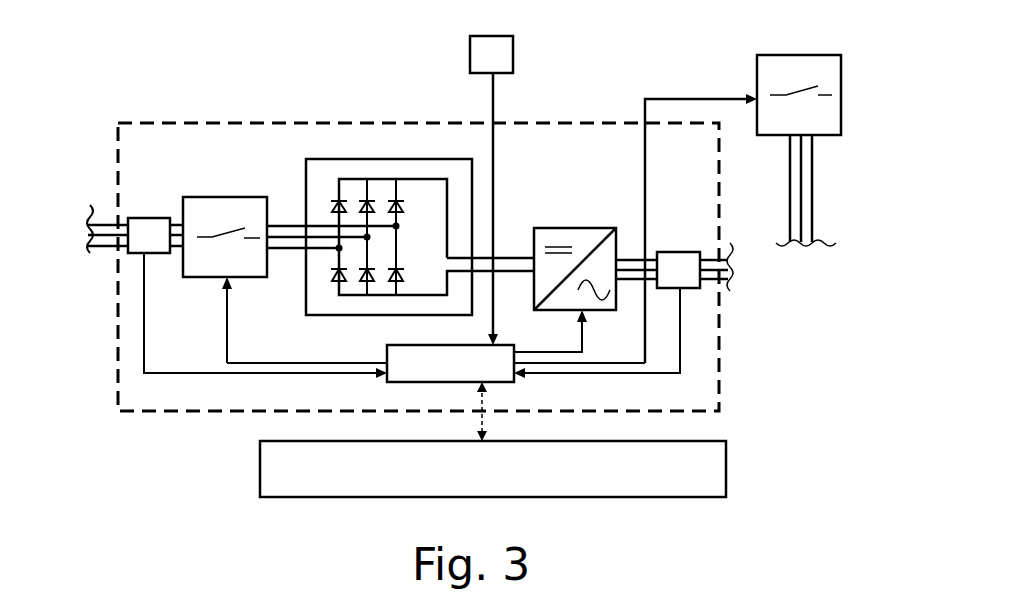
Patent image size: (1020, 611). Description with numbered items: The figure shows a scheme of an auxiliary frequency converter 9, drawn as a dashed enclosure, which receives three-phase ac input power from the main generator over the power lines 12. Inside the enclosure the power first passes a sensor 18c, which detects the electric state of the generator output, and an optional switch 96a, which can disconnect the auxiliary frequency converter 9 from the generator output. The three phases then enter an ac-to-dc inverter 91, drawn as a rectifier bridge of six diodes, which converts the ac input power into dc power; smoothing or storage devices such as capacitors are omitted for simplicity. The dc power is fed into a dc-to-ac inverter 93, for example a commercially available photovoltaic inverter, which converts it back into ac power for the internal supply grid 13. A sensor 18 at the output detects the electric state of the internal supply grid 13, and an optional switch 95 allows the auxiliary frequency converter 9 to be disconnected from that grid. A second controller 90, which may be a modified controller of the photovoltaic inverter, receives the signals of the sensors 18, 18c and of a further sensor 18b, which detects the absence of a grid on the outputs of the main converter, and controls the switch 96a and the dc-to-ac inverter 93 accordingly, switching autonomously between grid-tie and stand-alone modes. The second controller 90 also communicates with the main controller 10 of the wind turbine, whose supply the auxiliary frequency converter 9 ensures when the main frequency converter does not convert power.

The auxiliary frequency converter 9 is at (297, 119).
The main controller 10 is at (685, 480).
The power lines 12 is at (93, 208).
The internal supply grid 13 is at (776, 234).
The sensor 18 is at (690, 285).
The sensor 18b is at (493, 60).
The sensor 18c is at (150, 232).
The second controller 90 is at (415, 373).
The ac-to-dc inverter 91 is at (396, 156).
The dc-to-ac inverter 93 is at (583, 237).
The switch 95 is at (771, 70).
The switch 96a is at (212, 205).